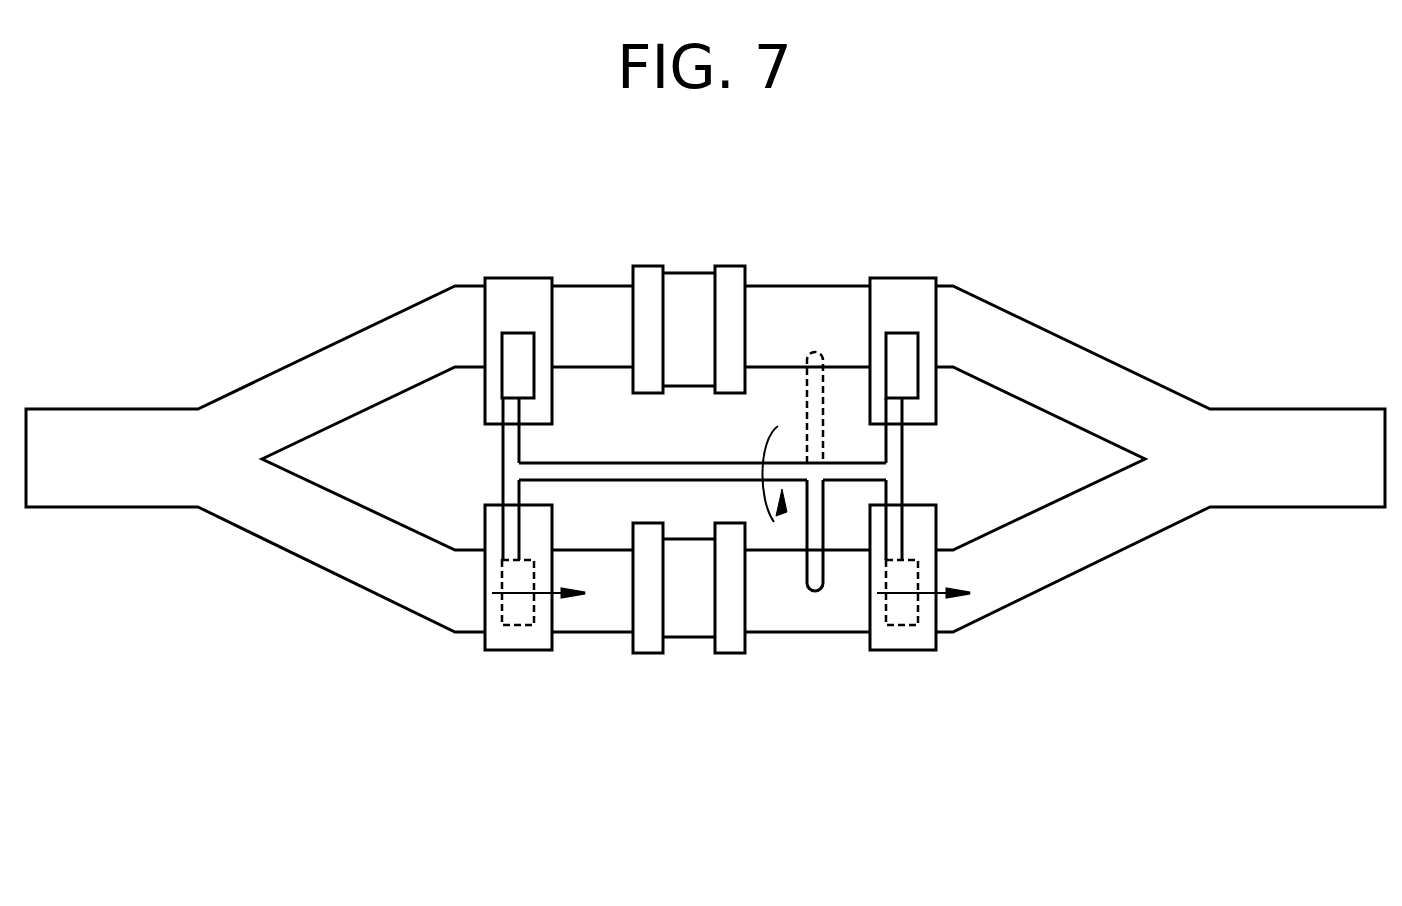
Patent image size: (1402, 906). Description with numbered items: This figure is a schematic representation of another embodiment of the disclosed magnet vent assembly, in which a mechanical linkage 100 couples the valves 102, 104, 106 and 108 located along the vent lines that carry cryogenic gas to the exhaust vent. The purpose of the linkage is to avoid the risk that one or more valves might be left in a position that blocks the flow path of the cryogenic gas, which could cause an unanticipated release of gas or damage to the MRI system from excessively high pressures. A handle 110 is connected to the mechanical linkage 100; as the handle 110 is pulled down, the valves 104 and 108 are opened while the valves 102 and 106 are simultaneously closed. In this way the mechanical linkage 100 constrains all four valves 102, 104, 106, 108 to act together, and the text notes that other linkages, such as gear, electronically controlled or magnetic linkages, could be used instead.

The mechanical linkage 100 is at (500, 463).
The valve 102 is at (525, 292).
The valve 104 is at (515, 638).
The valve 106 is at (907, 292).
The valve 108 is at (907, 652).
The handle 110 is at (815, 597).